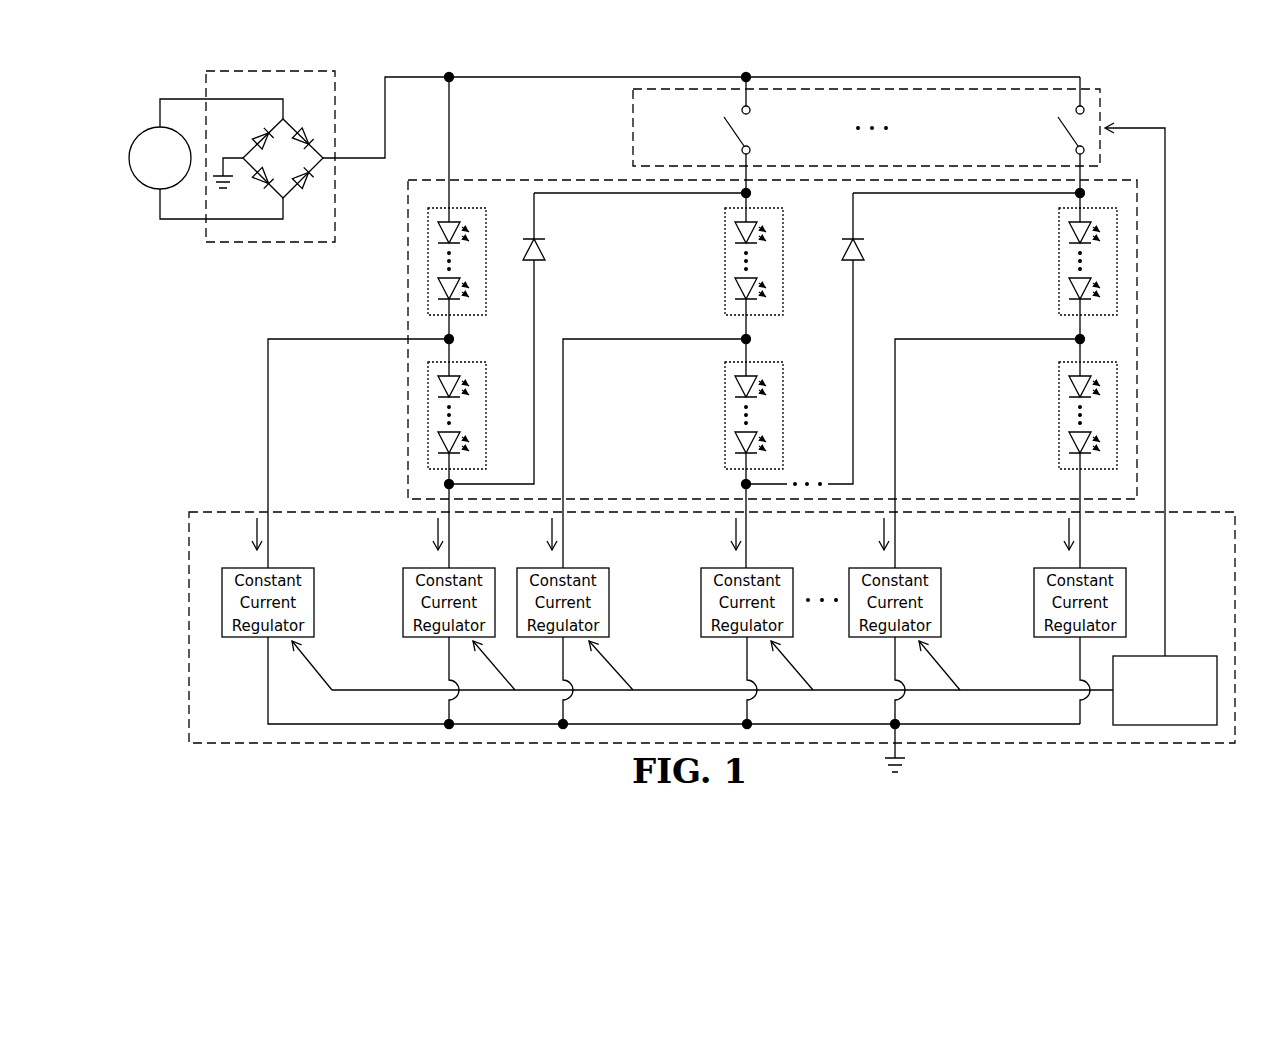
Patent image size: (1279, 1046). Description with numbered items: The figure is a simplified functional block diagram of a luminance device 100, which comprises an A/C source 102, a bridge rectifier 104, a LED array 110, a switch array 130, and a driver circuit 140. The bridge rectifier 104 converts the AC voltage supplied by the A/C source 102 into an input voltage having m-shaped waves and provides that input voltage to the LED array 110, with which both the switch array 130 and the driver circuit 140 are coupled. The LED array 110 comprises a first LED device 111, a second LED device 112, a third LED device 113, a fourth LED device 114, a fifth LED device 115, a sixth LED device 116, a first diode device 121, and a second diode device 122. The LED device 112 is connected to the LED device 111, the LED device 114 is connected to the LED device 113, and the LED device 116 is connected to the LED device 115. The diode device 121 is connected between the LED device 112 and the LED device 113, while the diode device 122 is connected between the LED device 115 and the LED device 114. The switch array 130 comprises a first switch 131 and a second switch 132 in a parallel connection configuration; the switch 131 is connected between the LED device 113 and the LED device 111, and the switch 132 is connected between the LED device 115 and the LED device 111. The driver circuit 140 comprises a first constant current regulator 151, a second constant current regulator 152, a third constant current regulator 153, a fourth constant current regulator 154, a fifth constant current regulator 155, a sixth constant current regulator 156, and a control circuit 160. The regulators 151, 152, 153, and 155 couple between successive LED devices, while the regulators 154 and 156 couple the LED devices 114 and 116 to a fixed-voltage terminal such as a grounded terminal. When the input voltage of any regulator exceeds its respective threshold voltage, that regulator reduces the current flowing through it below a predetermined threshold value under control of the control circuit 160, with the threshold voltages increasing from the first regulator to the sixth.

The luminance device 100 is at (168, 414).
The A/C source 102 is at (140, 182).
The bridge rectifier 104 is at (272, 243).
The LED array 110 is at (728, 339).
The first LED device 111 is at (428, 262).
The second LED device 112 is at (428, 416).
The third LED device 113 is at (725, 262).
The fourth LED device 114 is at (725, 417).
The fifth LED device 115 is at (1058, 262).
The sixth LED device 116 is at (1058, 417).
The first diode device 121 is at (545, 248).
The second diode device 122 is at (864, 248).
The switch array 130 is at (829, 127).
The first switch 131 is at (730, 128).
The second switch 132 is at (1060, 128).
The driver circuit 140 is at (674, 450).
The first constant current regulator 151 is at (314, 601).
The second constant current regulator 152 is at (403, 602).
The third constant current regulator 153 is at (610, 601).
The fourth constant current regulator 154 is at (700, 602).
The fifth constant current regulator 155 is at (942, 601).
The sixth constant current regulator 156 is at (1034, 602).
The control circuit 160 is at (1189, 656).